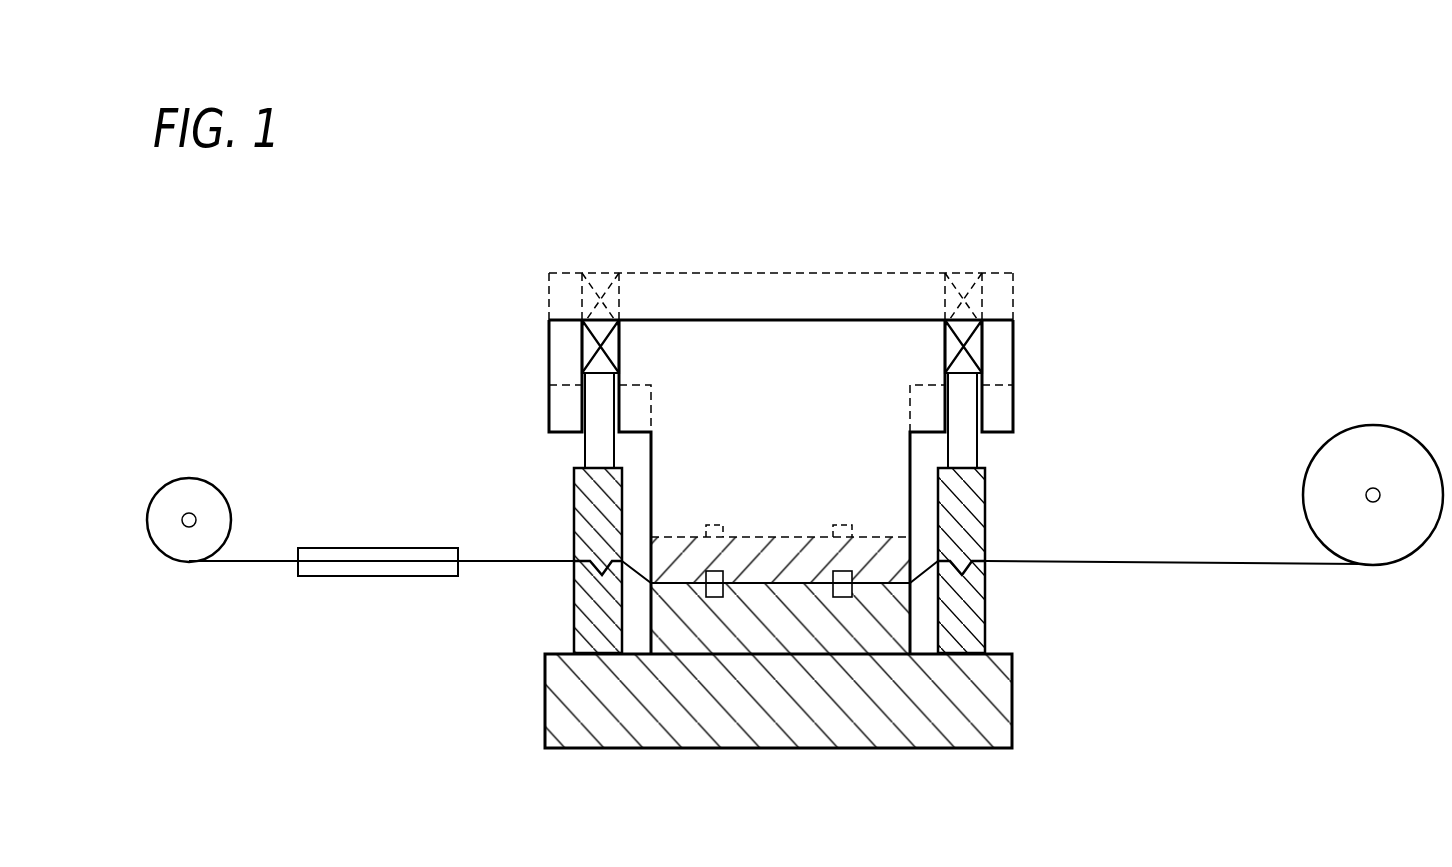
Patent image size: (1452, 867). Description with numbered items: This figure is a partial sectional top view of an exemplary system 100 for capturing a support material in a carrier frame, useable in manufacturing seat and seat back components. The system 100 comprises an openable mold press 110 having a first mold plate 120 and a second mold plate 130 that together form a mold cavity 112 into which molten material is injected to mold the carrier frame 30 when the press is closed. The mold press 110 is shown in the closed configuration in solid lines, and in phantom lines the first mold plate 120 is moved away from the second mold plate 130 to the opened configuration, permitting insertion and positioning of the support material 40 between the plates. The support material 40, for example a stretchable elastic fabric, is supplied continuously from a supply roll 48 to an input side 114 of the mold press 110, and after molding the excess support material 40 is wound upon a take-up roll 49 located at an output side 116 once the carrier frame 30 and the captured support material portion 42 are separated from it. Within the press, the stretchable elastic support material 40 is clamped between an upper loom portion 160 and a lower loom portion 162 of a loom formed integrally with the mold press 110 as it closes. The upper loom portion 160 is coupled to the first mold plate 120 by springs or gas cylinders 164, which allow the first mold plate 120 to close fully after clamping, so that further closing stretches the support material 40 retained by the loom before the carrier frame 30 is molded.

The system 100 is at (1262, 248).
The openable mold press 110 is at (545, 367).
The first mold plate 120 is at (1013, 337).
The springs or gas cylinders 164 is at (600, 303).
The upper loom portion 160 is at (574, 505).
The lower loom portion 162 is at (574, 617).
The second mold plate 130 is at (1012, 695).
The mold cavity 112 is at (715, 597).
The input side 114 is at (990, 567).
The output side 116 is at (558, 573).
The support material 40 is at (1248, 565).
The support material portion 42 is at (383, 562).
The carrier frame 30 is at (318, 576).
The take-up roll 49 is at (189, 478).
The supply roll 48 is at (1375, 425).